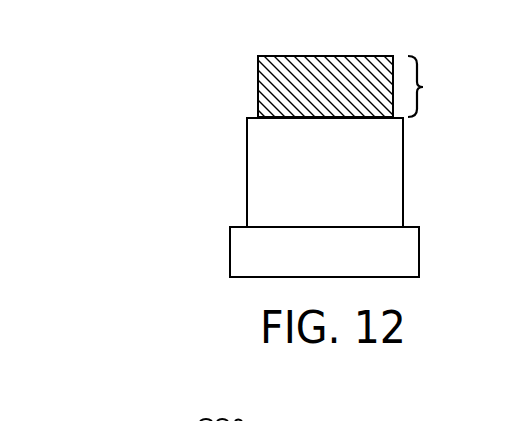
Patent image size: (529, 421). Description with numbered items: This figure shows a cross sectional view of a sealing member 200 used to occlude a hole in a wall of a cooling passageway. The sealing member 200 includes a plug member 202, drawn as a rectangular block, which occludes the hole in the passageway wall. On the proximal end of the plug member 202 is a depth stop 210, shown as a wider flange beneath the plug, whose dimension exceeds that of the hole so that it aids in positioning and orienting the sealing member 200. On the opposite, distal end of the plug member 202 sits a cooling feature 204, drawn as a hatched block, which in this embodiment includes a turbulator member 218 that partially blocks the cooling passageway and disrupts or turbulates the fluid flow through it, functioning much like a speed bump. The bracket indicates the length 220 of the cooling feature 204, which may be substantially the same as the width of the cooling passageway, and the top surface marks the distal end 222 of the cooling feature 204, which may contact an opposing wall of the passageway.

The sealing member 200 is at (178, 228).
The plug member 202 is at (348, 181).
The cooling feature 204 is at (226, 99).
The depth stop 210 is at (348, 263).
The turbulator member 218 is at (325, 87).
The length 220 is at (424, 87).
The distal end 222 is at (222, 54).